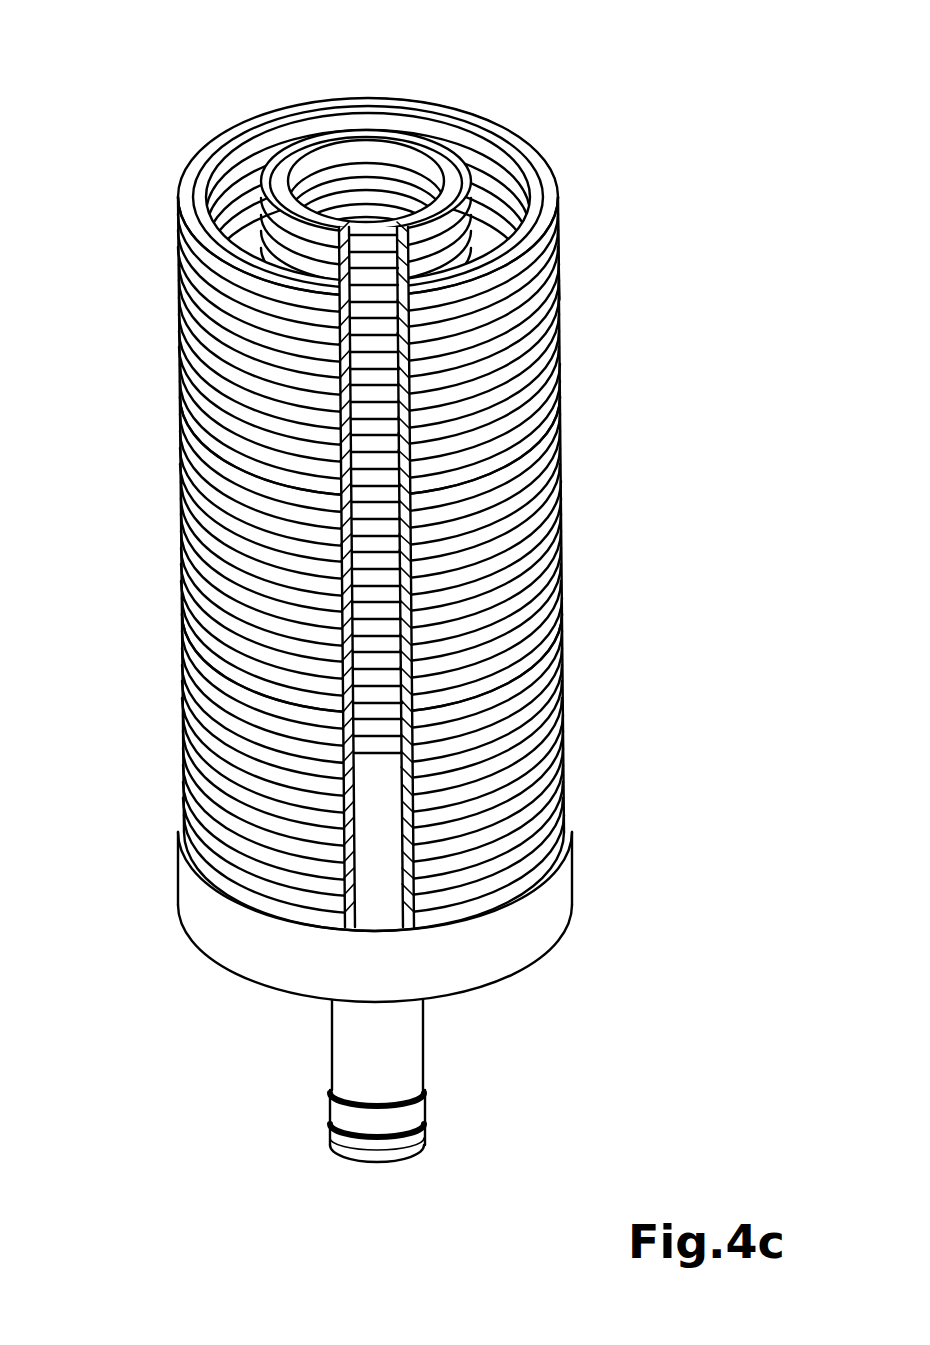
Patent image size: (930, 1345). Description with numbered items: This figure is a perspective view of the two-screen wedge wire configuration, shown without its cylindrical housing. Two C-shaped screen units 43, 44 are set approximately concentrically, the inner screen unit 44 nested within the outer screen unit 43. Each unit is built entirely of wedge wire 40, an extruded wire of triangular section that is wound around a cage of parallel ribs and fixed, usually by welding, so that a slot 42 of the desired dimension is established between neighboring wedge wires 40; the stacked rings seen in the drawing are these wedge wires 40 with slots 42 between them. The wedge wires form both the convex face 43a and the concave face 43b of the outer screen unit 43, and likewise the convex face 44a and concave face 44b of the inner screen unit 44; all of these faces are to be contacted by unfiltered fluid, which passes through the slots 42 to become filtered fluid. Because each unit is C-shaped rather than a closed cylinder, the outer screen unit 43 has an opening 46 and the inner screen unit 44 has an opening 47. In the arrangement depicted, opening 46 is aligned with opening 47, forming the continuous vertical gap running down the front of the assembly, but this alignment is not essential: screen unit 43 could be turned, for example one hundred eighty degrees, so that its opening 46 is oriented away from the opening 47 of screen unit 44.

The wedge wire 40 is at (525, 410).
The slot 42 is at (565, 490).
The C-shaped screen unit 43 is at (578, 752).
The convex face 43a is at (545, 152).
The concave face 43b is at (548, 213).
The C-shaped screen unit 44 is at (440, 156).
The convex face 44a is at (283, 170).
The concave face 44b is at (266, 182).
The opening 46 is at (365, 198).
The opening 47 is at (375, 917).